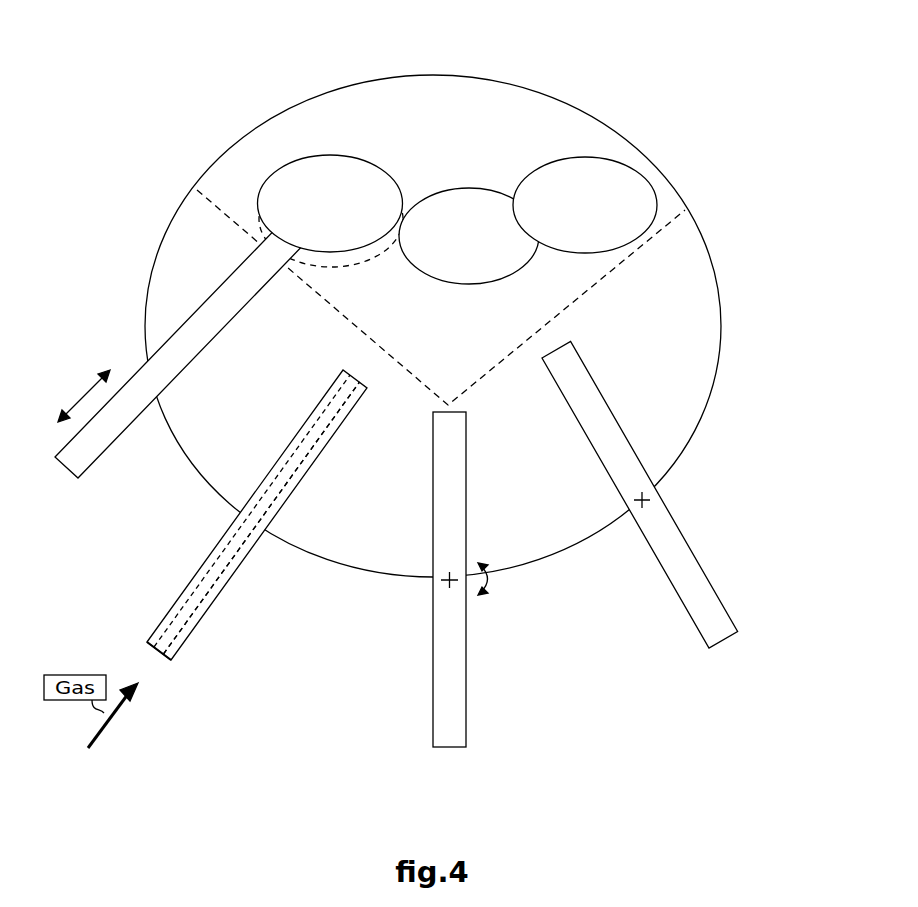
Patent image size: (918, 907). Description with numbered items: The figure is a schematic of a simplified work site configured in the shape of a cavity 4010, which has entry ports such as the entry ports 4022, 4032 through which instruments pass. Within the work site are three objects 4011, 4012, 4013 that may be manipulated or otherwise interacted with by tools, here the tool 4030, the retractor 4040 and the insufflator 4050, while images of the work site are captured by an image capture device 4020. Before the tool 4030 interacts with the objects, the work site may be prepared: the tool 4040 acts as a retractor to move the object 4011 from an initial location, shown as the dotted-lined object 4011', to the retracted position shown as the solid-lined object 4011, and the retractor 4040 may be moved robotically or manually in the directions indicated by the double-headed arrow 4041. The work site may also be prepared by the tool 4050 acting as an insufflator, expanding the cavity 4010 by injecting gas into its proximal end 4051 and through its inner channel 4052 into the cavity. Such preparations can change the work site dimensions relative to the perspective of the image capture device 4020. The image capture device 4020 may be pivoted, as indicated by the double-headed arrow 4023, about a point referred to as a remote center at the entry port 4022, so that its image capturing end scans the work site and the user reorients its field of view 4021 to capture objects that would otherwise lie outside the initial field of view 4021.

The cavity 4010 is at (592, 115).
The object 4011 is at (330, 180).
The dotted-lined object 4011' is at (331, 241).
The object 4012 is at (450, 188).
The object 4013 is at (557, 158).
The image capture device 4020 is at (503, 683).
The field of view 4021 is at (603, 278).
The entry port 4022 is at (433, 580).
The double-headed arrow 4023 is at (490, 583).
The tool 4030 is at (683, 607).
The entry port 4032 is at (655, 487).
The retractor 4040 is at (110, 447).
The double-headed arrow 4041 is at (92, 392).
The insufflator 4050 is at (190, 580).
The proximal end 4051 is at (155, 652).
The inner channel 4052 is at (203, 617).